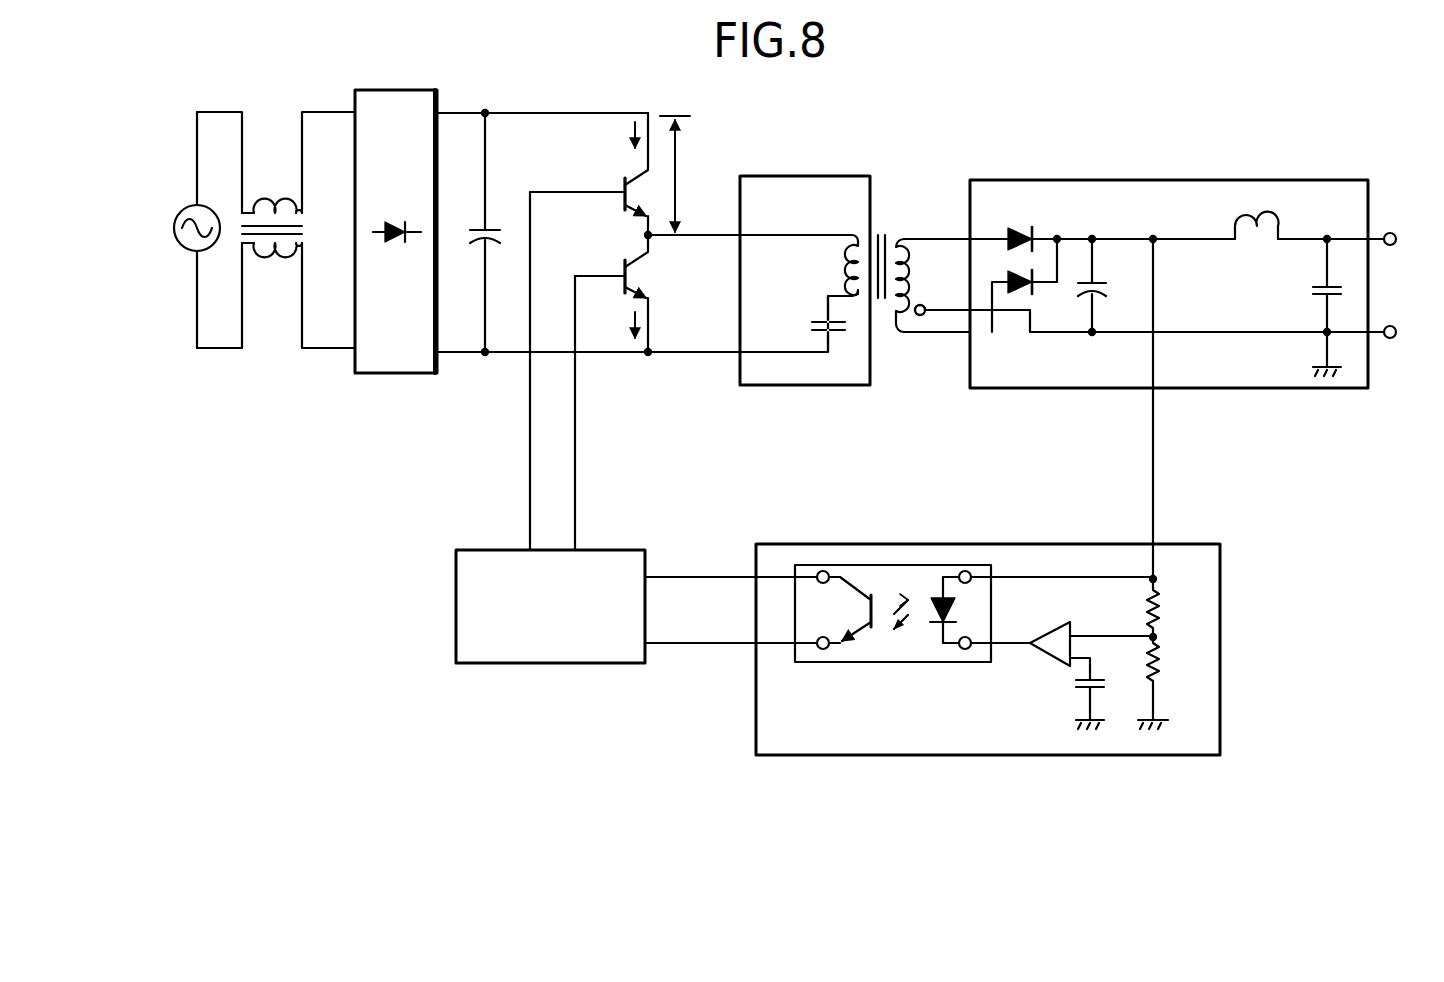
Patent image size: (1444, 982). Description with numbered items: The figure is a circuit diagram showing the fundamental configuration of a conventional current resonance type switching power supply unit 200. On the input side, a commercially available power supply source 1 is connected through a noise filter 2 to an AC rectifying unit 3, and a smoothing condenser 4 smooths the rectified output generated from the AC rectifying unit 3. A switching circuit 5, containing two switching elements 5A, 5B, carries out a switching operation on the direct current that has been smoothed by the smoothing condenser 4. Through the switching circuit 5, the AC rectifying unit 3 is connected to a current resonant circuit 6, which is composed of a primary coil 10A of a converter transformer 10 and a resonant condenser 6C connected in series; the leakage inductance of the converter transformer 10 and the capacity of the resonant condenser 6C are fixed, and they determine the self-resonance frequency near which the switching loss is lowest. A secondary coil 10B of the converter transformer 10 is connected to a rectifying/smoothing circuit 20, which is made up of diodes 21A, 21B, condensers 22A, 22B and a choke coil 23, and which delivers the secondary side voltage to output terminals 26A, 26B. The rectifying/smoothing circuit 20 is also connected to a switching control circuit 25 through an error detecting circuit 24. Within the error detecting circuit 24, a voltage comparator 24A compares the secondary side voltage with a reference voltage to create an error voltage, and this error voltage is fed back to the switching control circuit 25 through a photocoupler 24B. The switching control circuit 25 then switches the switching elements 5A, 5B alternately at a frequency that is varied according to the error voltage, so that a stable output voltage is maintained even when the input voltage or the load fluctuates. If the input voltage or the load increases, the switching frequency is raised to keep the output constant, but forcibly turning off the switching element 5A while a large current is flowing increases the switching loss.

The commercially available power supply source 1 is at (186, 206).
The noise filter 2 is at (272, 268).
The AC rectifying unit 3 is at (400, 375).
The smoothing condenser 4 is at (480, 227).
The switching circuit 5 is at (632, 292).
The switching element 5A is at (621, 182).
The switching element 5B is at (621, 262).
The current resonant circuit 6 is at (759, 248).
The resonant condenser 6C is at (812, 341).
The converter transformer 10 is at (949, 222).
The primary coil 10A is at (838, 264).
The secondary coil 10B is at (910, 234).
The rectifying/smoothing circuit 20 is at (1202, 348).
The diode 21A is at (1016, 232).
The diode 21B is at (1021, 296).
The condenser 22A is at (1096, 300).
The condenser 22B is at (1316, 289).
The choke coil 23 is at (1282, 229).
The error detecting circuit 24 is at (988, 615).
The voltage comparator 24A is at (1052, 664).
The photocoupler 24B is at (887, 665).
The switching control circuit 25 is at (556, 664).
The output terminal 26A is at (1396, 234).
The output terminal 26B is at (1396, 328).
The current resonance type switching power supply unit 200 is at (243, 742).